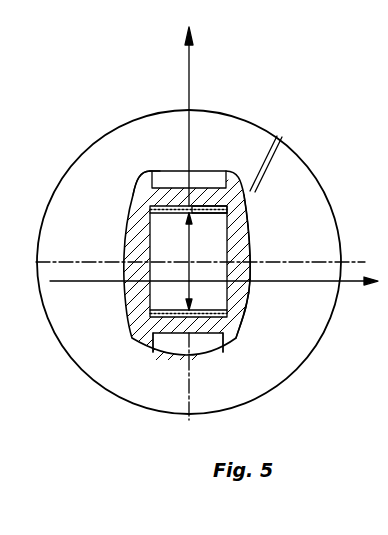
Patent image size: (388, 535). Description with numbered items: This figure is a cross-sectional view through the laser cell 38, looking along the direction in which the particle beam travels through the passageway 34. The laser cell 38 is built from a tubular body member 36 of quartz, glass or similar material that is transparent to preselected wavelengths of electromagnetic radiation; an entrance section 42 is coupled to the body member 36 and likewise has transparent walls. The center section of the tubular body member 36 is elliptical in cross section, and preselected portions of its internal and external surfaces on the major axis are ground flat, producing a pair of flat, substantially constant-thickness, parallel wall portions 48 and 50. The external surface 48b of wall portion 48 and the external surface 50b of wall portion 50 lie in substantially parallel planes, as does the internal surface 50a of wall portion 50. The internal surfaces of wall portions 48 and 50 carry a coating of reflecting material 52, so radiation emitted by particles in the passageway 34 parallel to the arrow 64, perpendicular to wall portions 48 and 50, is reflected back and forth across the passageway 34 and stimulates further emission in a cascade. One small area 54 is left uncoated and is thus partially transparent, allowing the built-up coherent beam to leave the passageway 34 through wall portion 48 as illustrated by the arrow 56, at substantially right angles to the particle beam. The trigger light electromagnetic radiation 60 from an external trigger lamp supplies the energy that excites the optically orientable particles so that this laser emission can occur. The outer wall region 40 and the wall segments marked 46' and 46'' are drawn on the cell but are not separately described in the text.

The passageway 34 is at (176, 253).
The tubular body member 36 is at (294, 225).
The laser cell 38 is at (368, 192).
The outer surface of piston body 40 is at (246, 211).
The entrance section 42 is at (301, 157).
The upper bearing wall portion 46' is at (114, 199).
The lower bearing wall portion 46'' is at (267, 309).
The wall portion 48 is at (197, 171).
The external surface 48b is at (162, 163).
The wall portion 50 is at (199, 337).
The internal surface 50a is at (170, 349).
The external surface 50b is at (212, 343).
The reflecting material 52 is at (161, 310).
The partially transparent area 54 is at (209, 221).
The arrow 56 is at (190, 79).
The trigger light electromagnetic radiation 60 is at (358, 282).
The arrow 64 is at (203, 261).